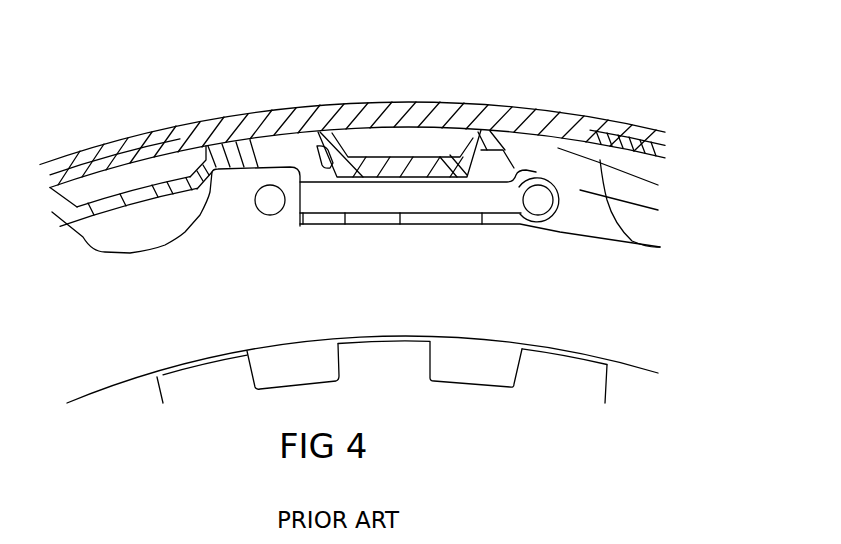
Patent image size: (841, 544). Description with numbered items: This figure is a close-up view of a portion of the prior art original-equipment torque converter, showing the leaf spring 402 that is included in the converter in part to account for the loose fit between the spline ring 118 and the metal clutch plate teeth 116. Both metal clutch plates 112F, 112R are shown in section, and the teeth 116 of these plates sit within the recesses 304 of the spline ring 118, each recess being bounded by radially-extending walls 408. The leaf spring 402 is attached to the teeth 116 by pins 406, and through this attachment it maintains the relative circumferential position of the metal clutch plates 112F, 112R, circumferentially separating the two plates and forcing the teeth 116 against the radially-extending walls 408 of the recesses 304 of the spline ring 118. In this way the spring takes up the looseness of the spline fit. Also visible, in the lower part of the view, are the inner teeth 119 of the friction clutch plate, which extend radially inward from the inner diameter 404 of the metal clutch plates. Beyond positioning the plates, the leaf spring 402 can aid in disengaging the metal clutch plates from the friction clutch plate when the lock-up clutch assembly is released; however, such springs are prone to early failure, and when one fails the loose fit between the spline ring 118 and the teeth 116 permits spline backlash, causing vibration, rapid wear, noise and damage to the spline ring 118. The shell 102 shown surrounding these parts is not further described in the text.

The outer shell 102 is at (358, 104).
The spline ring 118 is at (158, 157).
The pins 406 is at (263, 184).
The metal clutch plate teeth 116 is at (227, 195).
The metal clutch plate 112F is at (270, 167).
The metal clutch plate 112R is at (538, 200).
The radially-extending walls 408 is at (318, 146).
The leaf spring 402 is at (427, 202).
The recesses 304 is at (588, 168).
The inner diameter 404 is at (257, 343).
The inner teeth 119 is at (306, 375).